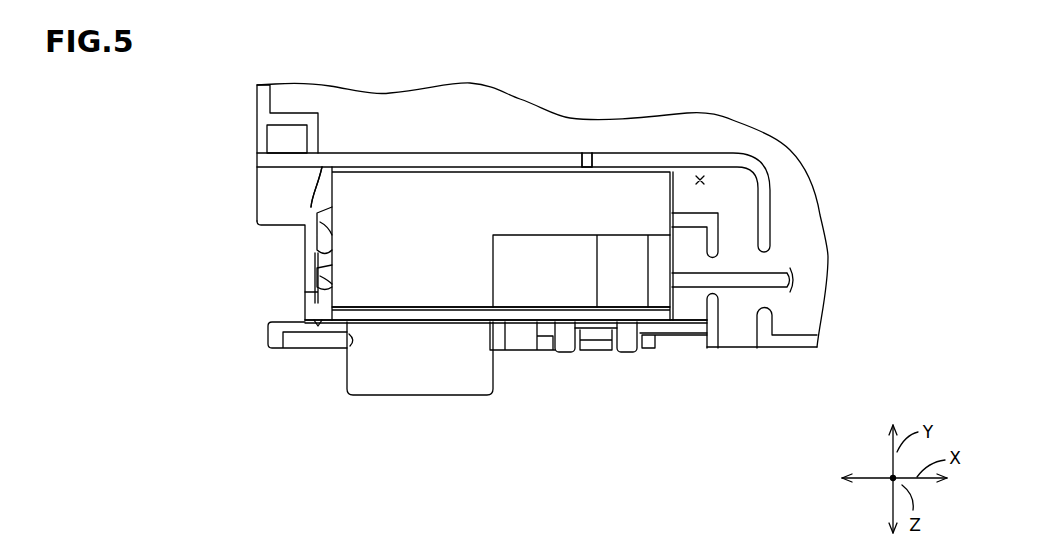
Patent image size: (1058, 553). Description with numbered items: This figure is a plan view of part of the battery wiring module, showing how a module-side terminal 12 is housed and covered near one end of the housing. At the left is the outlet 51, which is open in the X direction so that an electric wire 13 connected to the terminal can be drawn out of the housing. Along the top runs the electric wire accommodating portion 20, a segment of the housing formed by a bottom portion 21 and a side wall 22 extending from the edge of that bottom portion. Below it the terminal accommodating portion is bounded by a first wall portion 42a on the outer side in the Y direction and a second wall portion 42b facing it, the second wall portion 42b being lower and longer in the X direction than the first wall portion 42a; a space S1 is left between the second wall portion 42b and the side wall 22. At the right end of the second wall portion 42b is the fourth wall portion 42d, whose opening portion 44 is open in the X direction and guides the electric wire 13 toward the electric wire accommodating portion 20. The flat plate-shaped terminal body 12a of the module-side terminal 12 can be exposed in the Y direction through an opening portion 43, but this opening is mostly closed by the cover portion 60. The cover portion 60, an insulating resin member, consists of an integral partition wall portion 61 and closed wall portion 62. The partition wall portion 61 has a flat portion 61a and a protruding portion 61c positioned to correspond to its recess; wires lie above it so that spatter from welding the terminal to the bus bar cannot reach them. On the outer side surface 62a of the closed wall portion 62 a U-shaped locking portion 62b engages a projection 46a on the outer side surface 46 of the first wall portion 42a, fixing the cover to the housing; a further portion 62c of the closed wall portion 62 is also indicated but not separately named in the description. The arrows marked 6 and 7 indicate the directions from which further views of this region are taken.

The section line VI-VI 6 is at (447, 67).
The section line VII-VII 7 is at (233, 250).
The module-side terminal 12 is at (402, 397).
The terminal body 12a is at (357, 378).
The electric wire 13 is at (793, 286).
The electric wire accommodating portion 20 is at (750, 132).
The bottom portion 21 is at (797, 160).
The side wall 22 is at (466, 157).
The first wall portion 42a is at (695, 337).
The second wall portion 42b is at (703, 220).
The fourth wall portion 42d is at (712, 238).
The opening portion 43 is at (347, 345).
The opening portion 44 is at (724, 296).
The outer side surface 46 is at (667, 337).
The projection 46a is at (605, 352).
The outlet 51 is at (263, 183).
The cover portion 60 is at (375, 165).
The partition wall portion 61 is at (523, 183).
The flat portion 61a is at (582, 183).
The protruding portion 61c is at (622, 248).
The closed wall portion 62 is at (473, 323).
The outer side surface 62a is at (419, 327).
The locking portion 62b is at (627, 352).
The substrate protrusion 62c is at (583, 352).
The space S1 is at (700, 176).